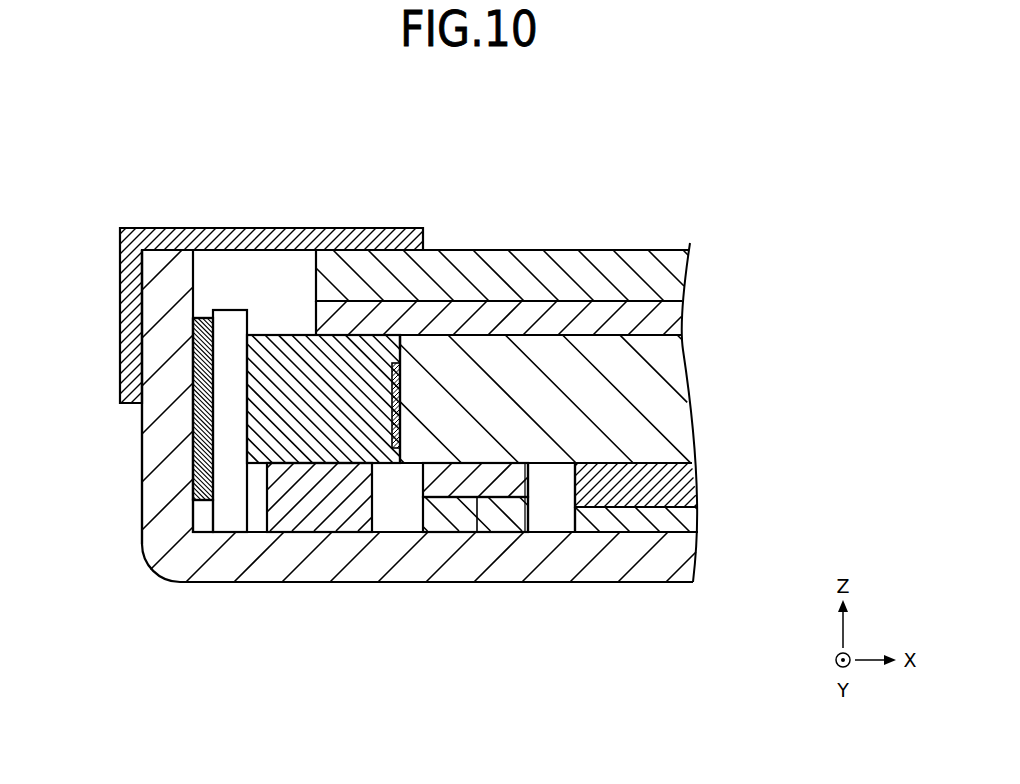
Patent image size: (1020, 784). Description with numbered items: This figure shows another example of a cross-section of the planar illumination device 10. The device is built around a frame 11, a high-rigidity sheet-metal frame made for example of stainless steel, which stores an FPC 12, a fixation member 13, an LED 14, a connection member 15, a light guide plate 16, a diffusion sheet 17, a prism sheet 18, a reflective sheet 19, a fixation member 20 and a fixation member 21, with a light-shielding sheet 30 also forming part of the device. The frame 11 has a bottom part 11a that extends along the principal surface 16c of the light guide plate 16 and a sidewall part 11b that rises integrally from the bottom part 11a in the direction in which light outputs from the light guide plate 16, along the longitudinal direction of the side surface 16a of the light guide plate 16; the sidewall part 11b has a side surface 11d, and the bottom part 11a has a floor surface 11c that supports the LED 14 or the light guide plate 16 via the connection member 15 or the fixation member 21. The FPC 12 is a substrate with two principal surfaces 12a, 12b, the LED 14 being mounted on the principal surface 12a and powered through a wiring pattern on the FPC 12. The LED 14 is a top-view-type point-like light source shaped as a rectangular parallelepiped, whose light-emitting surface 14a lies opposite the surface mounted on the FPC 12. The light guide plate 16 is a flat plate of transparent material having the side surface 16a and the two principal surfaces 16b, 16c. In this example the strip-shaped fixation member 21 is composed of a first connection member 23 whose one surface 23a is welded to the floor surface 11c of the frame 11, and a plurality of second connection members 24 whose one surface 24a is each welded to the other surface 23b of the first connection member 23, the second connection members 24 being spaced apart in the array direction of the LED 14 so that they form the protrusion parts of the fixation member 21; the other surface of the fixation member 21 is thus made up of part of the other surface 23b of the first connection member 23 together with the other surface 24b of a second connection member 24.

The planar illumination device 10 is at (705, 140).
The frame 11 is at (401, 451).
The bottom part 11a is at (688, 556).
The sidewall part 11b is at (150, 443).
The floor surface 11c is at (556, 530).
The side surface 11d is at (196, 316).
The FPC 12 is at (211, 407).
The principal surface 12a is at (250, 328).
The principal surface 12b is at (203, 316).
The fixation member 13 is at (191, 489).
The LED 14 is at (330, 322).
The light-emitting surface 14a is at (394, 362).
The connection member 15 is at (284, 522).
The light guide plate 16 is at (584, 334).
The side surface 16a is at (400, 337).
The principal surface 16b is at (588, 334).
The principal surface 16c is at (582, 474).
The diffusion sheet 17 is at (672, 317).
The prism sheet 18 is at (676, 272).
The reflective sheet 19 is at (694, 479).
The fixation member 20 is at (692, 518).
The fixation member 21 is at (446, 597).
The first connection member 23 is at (426, 571).
The one surface 23a is at (440, 514).
The other surface 23b is at (431, 492).
The second connection member 24 is at (508, 570).
The one surface 24a is at (474, 498).
The other surface 24b is at (516, 460).
The light-shielding sheet 30 is at (127, 355).